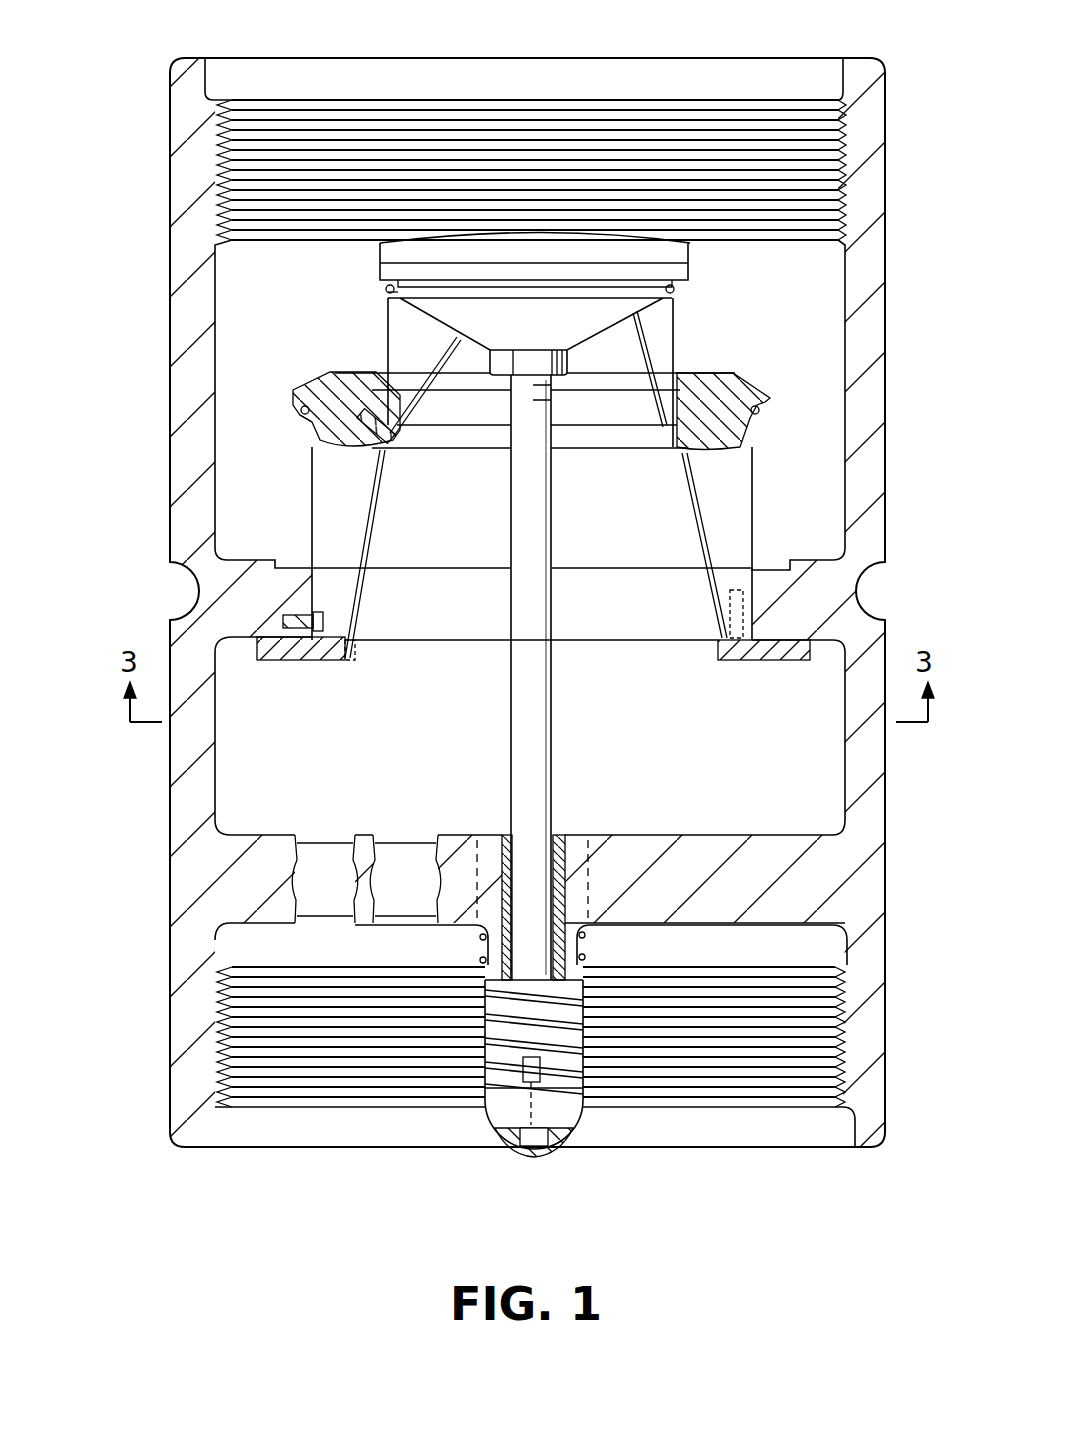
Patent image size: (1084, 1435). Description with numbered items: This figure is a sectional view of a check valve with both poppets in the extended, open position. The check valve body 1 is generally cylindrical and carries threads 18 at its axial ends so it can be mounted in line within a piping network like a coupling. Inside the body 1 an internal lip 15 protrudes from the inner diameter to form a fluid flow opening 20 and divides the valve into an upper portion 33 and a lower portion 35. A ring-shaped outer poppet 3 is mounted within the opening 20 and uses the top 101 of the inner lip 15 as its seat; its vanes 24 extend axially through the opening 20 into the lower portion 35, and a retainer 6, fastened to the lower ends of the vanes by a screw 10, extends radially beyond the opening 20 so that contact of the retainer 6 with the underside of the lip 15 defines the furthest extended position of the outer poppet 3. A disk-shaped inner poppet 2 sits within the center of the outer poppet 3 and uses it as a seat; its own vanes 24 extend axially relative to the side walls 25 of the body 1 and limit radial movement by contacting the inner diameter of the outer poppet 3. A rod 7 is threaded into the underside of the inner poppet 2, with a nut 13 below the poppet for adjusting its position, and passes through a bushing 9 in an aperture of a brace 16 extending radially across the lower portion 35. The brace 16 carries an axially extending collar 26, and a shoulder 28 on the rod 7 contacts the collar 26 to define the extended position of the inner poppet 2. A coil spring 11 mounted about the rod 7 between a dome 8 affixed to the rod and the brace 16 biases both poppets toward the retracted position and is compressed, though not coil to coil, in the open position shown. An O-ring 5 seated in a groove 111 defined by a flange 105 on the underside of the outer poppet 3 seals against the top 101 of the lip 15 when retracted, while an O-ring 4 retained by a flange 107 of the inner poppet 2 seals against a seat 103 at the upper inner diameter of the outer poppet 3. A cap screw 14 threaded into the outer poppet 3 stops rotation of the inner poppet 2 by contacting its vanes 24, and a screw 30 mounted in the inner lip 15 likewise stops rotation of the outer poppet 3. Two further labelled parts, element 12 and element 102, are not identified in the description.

The check valve body 1 is at (676, 44).
The inner poppet 2 is at (690, 248).
The outer poppet 3 is at (327, 395).
The inner poppet O-ring 4 is at (675, 287).
The outer poppet O-ring 5 is at (760, 412).
The retainer 6 is at (373, 652).
The rod 7 is at (553, 740).
The dome 8 is at (492, 1118).
The bushing 9 is at (560, 852).
The screw 10 is at (732, 662).
The coil spring 11 is at (572, 1122).
The end cap 12 is at (540, 1155).
The nut 13 is at (523, 362).
The cap screw 14 is at (396, 442).
The internal lip 15 is at (218, 592).
The brace 16 is at (406, 850).
The threads 18 is at (318, 130).
The fluid flow opening 20 is at (442, 613).
The vanes 24 is at (392, 338).
The side walls 25 is at (866, 392).
The collar 26 is at (480, 954).
The shoulder 28 is at (548, 992).
The screw 30 is at (320, 612).
The upper portion 33 is at (822, 462).
The lower portion 35 is at (308, 760).
The top of the inner lip 101 is at (288, 562).
The o-ring 102 is at (380, 290).
The seat 103 is at (683, 383).
The flange 105 is at (300, 410).
The flange 107 is at (386, 296).
The groove 111 is at (306, 416).